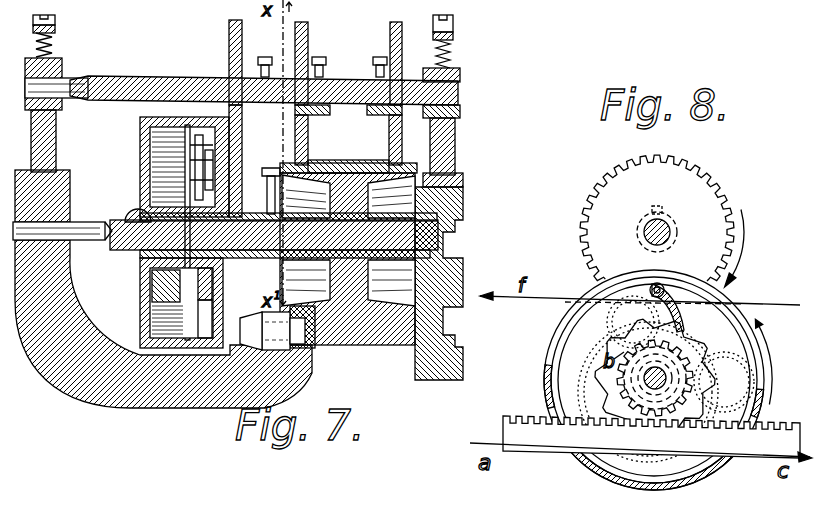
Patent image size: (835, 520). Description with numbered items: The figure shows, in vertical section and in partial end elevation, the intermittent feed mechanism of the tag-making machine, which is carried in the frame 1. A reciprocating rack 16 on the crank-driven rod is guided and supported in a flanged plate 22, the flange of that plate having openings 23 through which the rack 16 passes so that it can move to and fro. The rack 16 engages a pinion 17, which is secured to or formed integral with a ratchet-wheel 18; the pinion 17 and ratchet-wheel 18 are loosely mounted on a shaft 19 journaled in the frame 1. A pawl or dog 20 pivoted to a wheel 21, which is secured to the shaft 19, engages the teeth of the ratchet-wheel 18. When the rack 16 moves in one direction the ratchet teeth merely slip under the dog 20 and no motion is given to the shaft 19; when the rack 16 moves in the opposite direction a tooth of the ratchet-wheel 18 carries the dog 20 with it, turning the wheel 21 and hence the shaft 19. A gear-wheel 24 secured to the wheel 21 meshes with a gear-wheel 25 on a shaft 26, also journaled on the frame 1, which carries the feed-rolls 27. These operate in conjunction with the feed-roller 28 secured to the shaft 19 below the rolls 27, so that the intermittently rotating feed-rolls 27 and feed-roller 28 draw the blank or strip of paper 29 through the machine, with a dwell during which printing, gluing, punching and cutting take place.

In FIG. 7, the frame 1 is at (244, 211).
In FIG. 7, the rack 16 is at (143, 297).
In FIG. 8, the rack 16 is at (530, 433).
In FIG. 7, the pinion 17 is at (163, 264).
In FIG. 8, the pinion 17 is at (672, 378).
In FIG. 7, the ratchet-wheel 18 is at (198, 283).
In FIG. 8, the ratchet-wheel 18 is at (630, 405).
In FIG. 7, the shaft 19 is at (90, 228).
In FIG. 8, the shaft 19 is at (696, 302).
In FIG. 7, the pawl or dog 20 is at (195, 167).
In FIG. 8, the pawl or dog 20 is at (645, 312).
In FIG. 7, the wheel 21 is at (212, 122).
In FIG. 8, the wheel 21 is at (568, 357).
In FIG. 7, the flanged plate 22 is at (140, 140).
In FIG. 8, the flanged plate 22 is at (606, 478).
In FIG. 7, the openings 23 is at (140, 333).
In FIG. 8, the openings 23 is at (553, 394).
In FIG. 7, the gear-wheel 24 is at (236, 188).
In FIG. 8, the gear-wheel 24 is at (716, 398).
In FIG. 7, the gear-wheel 25 is at (229, 42).
In FIG. 8, the gear-wheel 25 is at (632, 186).
In FIG. 7, the shaft 26 is at (156, 78).
In FIG. 8, the shaft 26 is at (645, 235).
In FIG. 7, the feed-rolls 27 is at (306, 33).
In FIG. 7, the feed-roller 28 is at (445, 162).
In FIG. 7, the blank or strip of paper 29 is at (360, 165).
In FIG. 8, the blank or strip of paper 29 is at (640, 292).